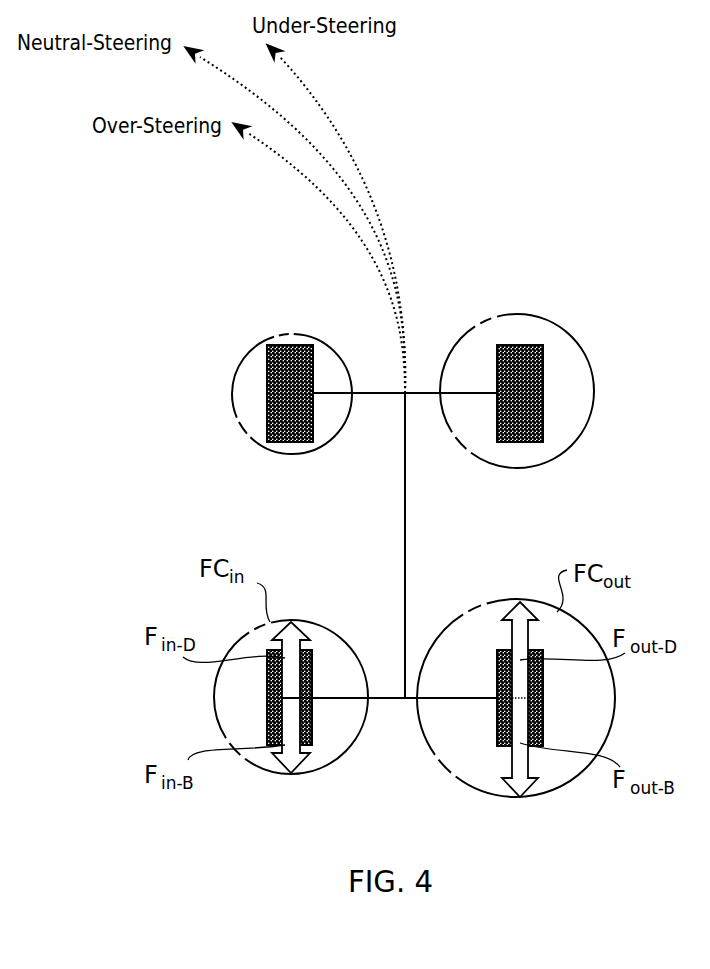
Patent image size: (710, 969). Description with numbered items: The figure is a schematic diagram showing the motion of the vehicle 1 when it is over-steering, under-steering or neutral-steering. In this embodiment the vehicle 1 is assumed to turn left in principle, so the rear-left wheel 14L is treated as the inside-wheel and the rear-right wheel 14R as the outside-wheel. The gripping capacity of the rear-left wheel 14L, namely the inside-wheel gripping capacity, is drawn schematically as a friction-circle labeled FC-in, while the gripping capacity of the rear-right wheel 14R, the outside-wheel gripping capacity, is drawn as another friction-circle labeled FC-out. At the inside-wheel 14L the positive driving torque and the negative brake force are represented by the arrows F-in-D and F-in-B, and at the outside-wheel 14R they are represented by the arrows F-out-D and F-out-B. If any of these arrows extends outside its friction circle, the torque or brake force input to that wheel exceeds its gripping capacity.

The vehicle 1 is at (174, 342).
The rear-left wheel 14L is at (310, 738).
The rear-right wheel 14R is at (497, 738).